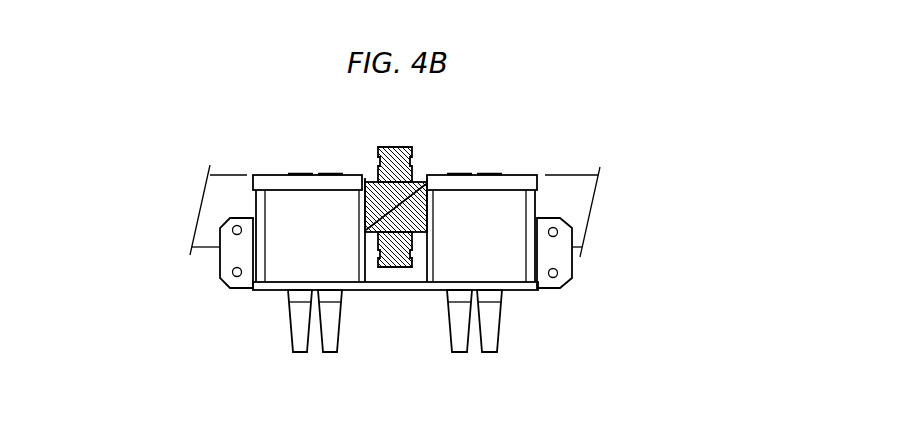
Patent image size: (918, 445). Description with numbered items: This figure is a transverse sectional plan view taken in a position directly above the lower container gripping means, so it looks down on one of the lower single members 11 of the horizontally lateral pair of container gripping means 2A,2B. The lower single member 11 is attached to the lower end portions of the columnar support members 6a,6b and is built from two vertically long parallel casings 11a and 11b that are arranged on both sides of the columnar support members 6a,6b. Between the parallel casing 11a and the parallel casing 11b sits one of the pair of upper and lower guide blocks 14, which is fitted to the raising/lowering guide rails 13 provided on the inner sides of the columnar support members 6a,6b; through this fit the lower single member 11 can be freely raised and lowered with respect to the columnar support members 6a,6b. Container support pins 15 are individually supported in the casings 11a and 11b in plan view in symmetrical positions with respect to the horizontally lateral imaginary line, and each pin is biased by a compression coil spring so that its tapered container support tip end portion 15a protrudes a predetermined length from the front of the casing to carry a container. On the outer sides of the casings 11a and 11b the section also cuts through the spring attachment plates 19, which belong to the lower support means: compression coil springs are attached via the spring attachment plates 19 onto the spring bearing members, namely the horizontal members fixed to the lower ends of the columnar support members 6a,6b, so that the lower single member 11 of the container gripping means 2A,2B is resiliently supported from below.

The container gripping means 2A,2B is at (250, 250).
The columnar support members 6a,6b is at (378, 202).
The lower single members 11 is at (517, 292).
The parallel casing 11a is at (487, 203).
The parallel casing 11b is at (292, 203).
The raising/lowering guide rails 13 is at (398, 253).
The guide blocks 14 is at (383, 273).
The container support pins 15 is at (330, 294).
The container support tip end portion 15a is at (330, 353).
The spring attachment plates 19 is at (550, 255).